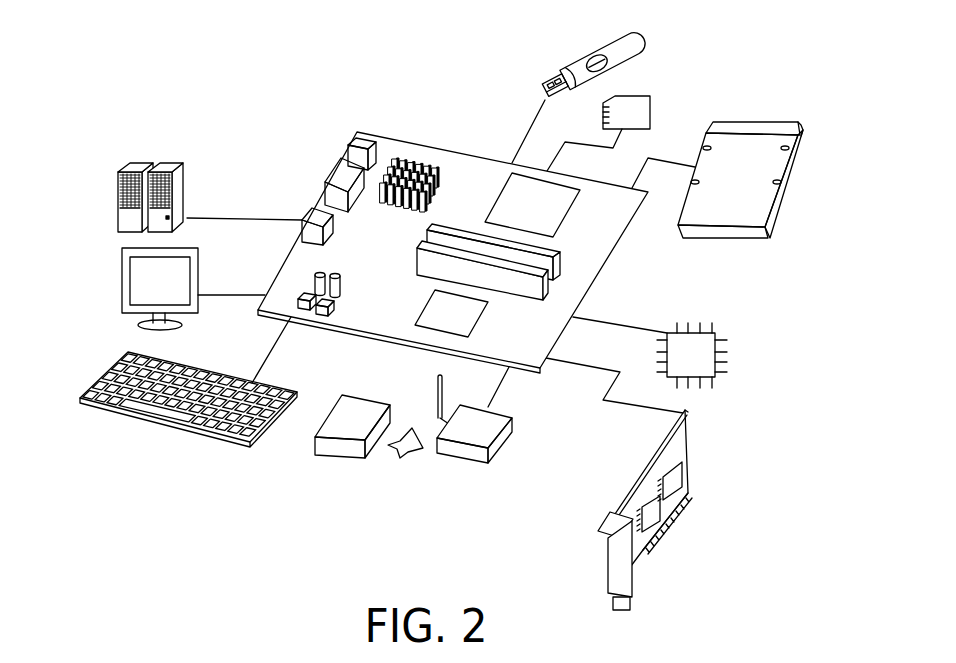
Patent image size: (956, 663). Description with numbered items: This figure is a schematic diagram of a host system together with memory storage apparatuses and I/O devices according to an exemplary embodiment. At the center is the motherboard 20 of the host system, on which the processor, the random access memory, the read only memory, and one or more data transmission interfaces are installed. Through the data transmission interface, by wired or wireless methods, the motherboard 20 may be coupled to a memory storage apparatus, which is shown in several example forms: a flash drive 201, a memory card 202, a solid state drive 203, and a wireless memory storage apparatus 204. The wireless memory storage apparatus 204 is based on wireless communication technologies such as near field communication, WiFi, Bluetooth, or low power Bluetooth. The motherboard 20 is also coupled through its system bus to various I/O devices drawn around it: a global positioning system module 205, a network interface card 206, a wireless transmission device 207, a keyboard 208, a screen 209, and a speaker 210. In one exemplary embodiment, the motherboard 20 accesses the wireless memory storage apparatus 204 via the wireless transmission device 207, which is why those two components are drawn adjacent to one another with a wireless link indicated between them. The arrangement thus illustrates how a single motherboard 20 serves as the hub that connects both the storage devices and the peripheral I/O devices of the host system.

The motherboard 20 is at (457, 170).
The flash drive 201 is at (588, 54).
The memory card 202 is at (650, 105).
The solid state drive 203 is at (755, 120).
The wireless memory storage apparatus 204 is at (328, 407).
The global positioning system module 205 is at (728, 353).
The network interface card 206 is at (690, 462).
The wireless transmission device 207 is at (505, 447).
The keyboard 208 is at (190, 435).
The screen 209 is at (118, 297).
The speaker 210 is at (117, 218).